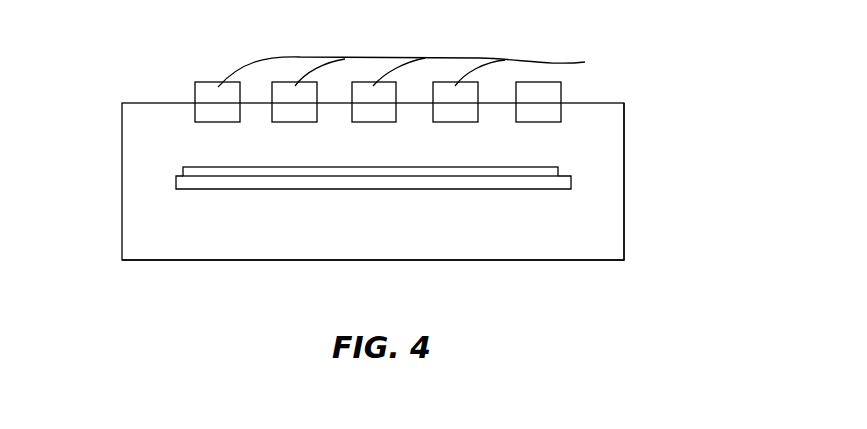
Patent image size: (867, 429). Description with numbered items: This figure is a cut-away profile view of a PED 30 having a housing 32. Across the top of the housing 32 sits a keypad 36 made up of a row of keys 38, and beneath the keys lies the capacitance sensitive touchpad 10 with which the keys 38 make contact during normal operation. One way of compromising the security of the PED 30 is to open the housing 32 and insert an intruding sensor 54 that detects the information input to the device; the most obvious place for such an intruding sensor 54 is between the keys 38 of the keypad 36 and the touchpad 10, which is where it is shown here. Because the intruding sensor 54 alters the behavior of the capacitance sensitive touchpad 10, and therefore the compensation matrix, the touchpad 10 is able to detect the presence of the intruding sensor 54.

The capacitance sensitive touchpad 10 is at (550, 183).
The PED 30 is at (652, 149).
The housing 32 is at (624, 220).
The keypad 36 is at (187, 80).
The keys 38 is at (538, 85).
The intruding sensor 54 is at (197, 167).